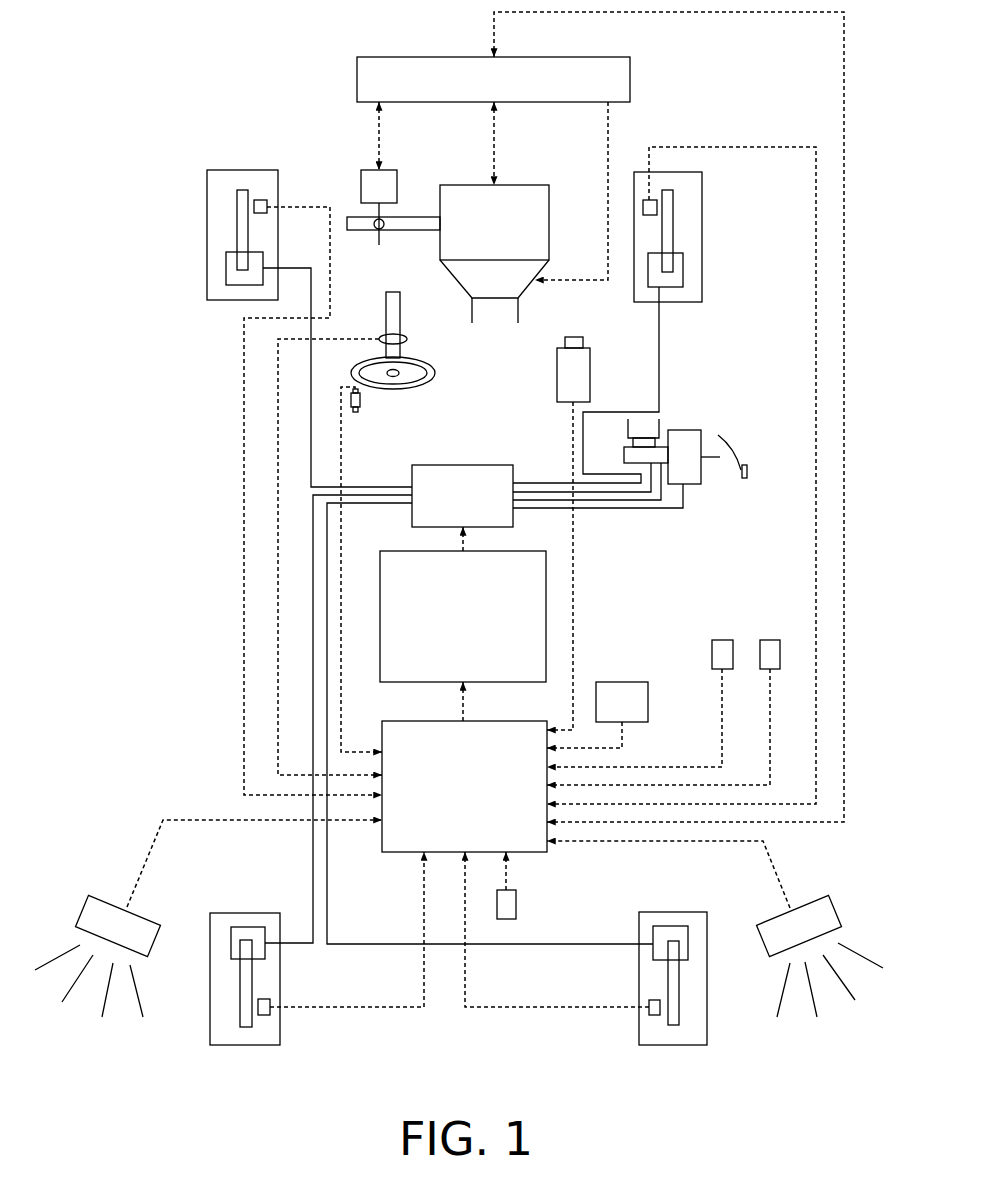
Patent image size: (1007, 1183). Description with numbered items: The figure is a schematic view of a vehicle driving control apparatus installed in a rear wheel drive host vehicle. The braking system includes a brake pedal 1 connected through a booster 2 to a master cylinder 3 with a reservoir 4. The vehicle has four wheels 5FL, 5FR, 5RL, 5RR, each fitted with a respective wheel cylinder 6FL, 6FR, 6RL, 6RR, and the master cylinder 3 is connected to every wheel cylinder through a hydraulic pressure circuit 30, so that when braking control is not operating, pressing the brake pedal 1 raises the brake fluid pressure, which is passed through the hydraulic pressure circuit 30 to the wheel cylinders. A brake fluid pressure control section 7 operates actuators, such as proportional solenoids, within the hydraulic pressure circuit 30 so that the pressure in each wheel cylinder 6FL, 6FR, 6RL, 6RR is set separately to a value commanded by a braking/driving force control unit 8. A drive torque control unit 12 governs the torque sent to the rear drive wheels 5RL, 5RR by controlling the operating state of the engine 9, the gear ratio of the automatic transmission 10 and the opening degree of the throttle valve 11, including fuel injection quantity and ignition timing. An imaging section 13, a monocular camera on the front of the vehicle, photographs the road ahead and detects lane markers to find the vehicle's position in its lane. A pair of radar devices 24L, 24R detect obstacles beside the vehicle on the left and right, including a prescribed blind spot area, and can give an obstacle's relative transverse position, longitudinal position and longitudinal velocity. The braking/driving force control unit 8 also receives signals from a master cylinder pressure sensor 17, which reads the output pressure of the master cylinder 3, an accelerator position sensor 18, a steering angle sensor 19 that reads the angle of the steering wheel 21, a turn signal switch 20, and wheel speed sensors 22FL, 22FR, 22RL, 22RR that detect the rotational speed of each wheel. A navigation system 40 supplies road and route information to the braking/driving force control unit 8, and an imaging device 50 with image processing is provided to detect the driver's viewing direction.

The brake pedal 1 is at (747, 472).
The booster 2 is at (701, 470).
The master cylinder 3 is at (624, 455).
The reservoir 4 is at (628, 428).
The front left wheel 5FL is at (279, 183).
The front right wheel 5FR is at (702, 204).
The rear left wheel 5RL is at (245, 912).
The rear right wheel 5RR is at (672, 912).
The front left wheel cylinder 6FL is at (226, 268).
The front right wheel cylinder 6FR is at (683, 270).
The rear left wheel cylinder 6RL is at (231, 943).
The rear right wheel cylinder 6RR is at (688, 945).
The brake fluid pressure control section 7 is at (397, 551).
The braking/driving force control unit 8 is at (398, 721).
The engine 9 is at (526, 185).
The automatic transmission 10 is at (440, 268).
The throttle valve 11 is at (376, 232).
The drive torque control unit 12 is at (631, 80).
The imaging section 13 is at (590, 370).
The master cylinder pressure sensor 17 is at (722, 640).
The accelerator position sensor 18 is at (770, 640).
The steering angle sensor 19 is at (407, 339).
The turn signal switch 20 is at (518, 905).
The steering wheel 21 is at (435, 373).
The front left wheel speed sensor 22FL is at (267, 208).
The front right wheel speed sensor 22FR is at (643, 207).
The rear left wheel speed sensor 22RL is at (272, 1010).
The rear right wheel speed sensor 22RR is at (649, 1010).
The left radar device 24L is at (108, 894).
The right radar device 24R is at (806, 894).
The hydraulic pressure circuit 30 is at (488, 465).
The navigation system 40 is at (622, 682).
The imaging device 50 is at (360, 400).